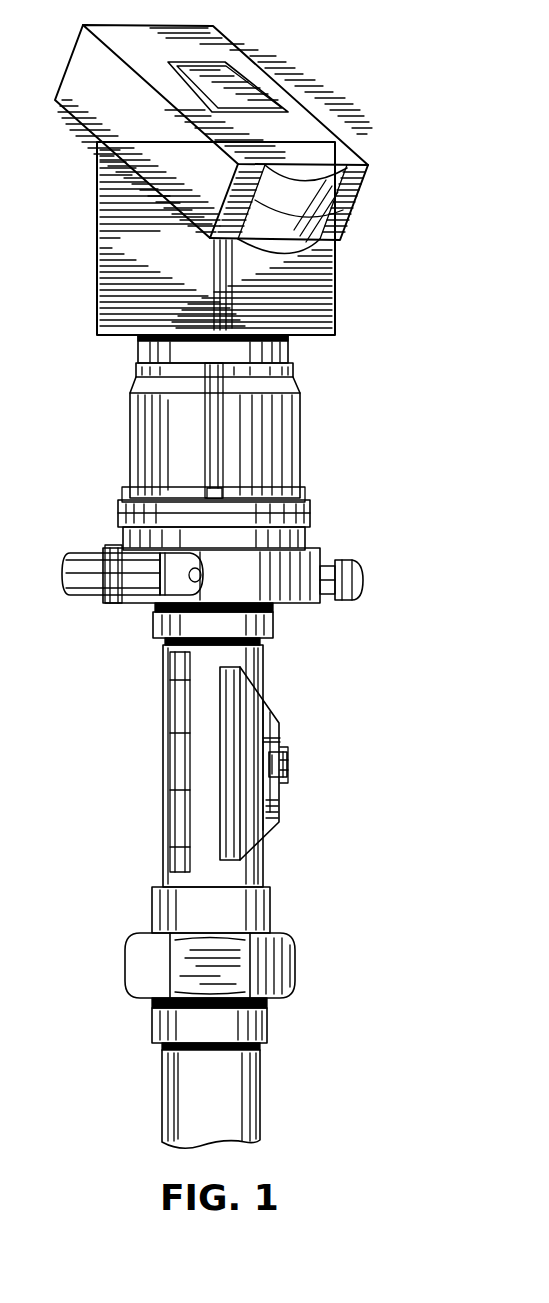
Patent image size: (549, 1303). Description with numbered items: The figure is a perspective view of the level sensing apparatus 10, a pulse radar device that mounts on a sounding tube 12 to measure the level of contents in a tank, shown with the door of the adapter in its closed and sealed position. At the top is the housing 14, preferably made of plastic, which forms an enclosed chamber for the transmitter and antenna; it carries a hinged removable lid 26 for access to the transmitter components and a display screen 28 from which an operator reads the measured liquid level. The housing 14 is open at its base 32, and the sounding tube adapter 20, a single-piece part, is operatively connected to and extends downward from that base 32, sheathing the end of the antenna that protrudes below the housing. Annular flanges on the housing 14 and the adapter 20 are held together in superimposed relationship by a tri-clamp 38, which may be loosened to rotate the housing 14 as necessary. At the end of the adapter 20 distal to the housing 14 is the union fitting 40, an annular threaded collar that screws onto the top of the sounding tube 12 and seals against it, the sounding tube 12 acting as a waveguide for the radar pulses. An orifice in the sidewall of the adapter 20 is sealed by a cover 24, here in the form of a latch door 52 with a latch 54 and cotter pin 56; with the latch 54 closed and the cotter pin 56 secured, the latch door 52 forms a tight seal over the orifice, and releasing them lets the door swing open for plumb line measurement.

The level sensing apparatus 10 is at (420, 378).
The sounding tube 12 is at (207, 1098).
The housing 14 is at (145, 233).
The sounding tube adapter 20 is at (138, 722).
The cover 24 is at (278, 723).
The hinged removable lid 26 is at (302, 132).
The display screen 28 is at (240, 92).
The base 32 is at (123, 535).
The tri-clamp 38 is at (360, 552).
The union fitting 40 is at (175, 1028).
The latch door 52 is at (243, 778).
The latch 54 is at (288, 760).
The cotter pin 56 is at (278, 745).